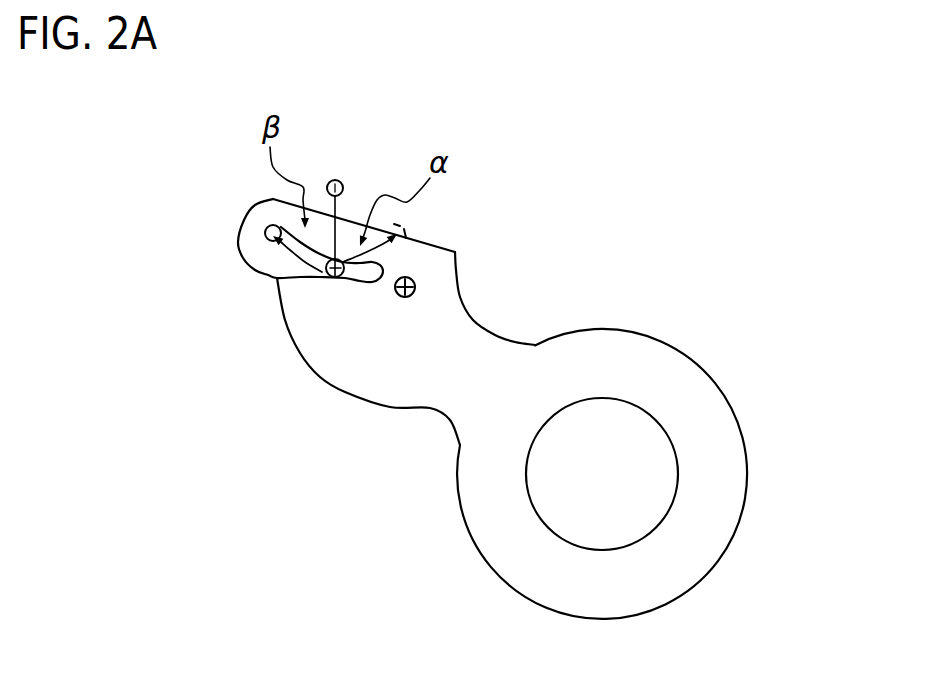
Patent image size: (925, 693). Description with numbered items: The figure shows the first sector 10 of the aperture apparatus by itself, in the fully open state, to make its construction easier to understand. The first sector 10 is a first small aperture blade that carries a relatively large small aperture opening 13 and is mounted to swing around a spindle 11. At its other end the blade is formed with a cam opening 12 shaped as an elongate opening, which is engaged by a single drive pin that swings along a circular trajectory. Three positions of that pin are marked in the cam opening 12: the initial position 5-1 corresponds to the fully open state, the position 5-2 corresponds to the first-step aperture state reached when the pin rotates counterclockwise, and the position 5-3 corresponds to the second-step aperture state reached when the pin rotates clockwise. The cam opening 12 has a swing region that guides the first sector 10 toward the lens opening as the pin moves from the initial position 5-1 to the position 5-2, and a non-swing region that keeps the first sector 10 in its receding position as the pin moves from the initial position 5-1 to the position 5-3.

The first sector 10 is at (690, 543).
The spindle 11 is at (413, 280).
The cam opening 12 is at (277, 279).
The small aperture opening 13 is at (650, 467).
The initial position 5-1 is at (338, 277).
The position 5-2 is at (405, 228).
The position 5-3 is at (265, 228).